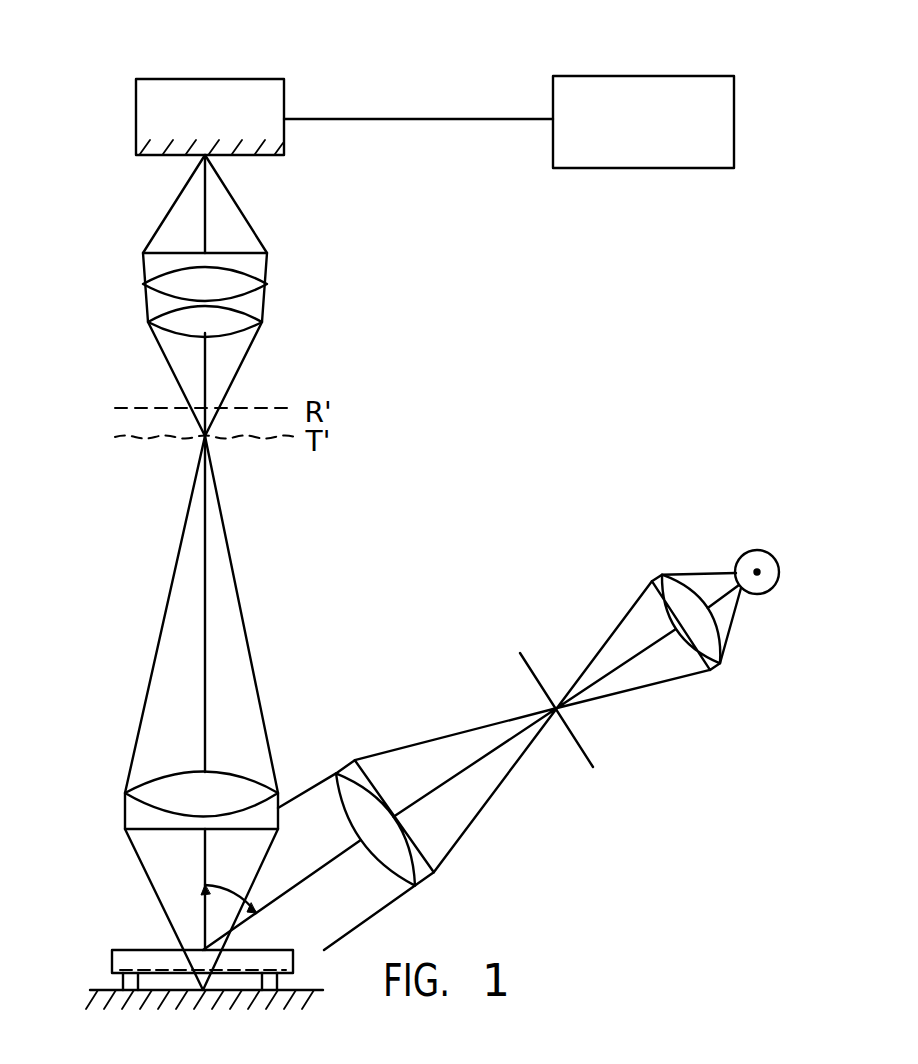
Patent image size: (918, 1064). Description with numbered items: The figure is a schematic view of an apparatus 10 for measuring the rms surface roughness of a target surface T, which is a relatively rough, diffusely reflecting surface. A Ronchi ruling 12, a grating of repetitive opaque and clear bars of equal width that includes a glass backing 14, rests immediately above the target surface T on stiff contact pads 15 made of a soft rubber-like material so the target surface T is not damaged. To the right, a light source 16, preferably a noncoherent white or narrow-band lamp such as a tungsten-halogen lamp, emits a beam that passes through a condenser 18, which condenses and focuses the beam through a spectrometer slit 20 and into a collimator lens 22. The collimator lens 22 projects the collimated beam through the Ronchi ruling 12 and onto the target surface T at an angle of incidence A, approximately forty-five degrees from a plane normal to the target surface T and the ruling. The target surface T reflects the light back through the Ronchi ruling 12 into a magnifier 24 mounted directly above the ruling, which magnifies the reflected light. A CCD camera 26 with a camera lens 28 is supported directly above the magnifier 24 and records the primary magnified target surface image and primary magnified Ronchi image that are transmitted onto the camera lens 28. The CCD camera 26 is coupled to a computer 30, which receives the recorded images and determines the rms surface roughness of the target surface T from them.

The apparatus 10 is at (463, 74).
The Ronchi ruling 12 is at (113, 987).
The glass backing 14 is at (123, 948).
The contact pads 15 is at (144, 986).
The light source 16 is at (762, 550).
The condenser 18 is at (655, 574).
The spectrometer slit 20 is at (532, 664).
The collimator lens 22 is at (350, 760).
The magnifier 24 is at (128, 792).
The CCD camera 26 is at (186, 78).
The camera lens 28 is at (143, 278).
The computer 30 is at (632, 76).
The angle of incidence A is at (217, 888).
The target surface T is at (216, 997).